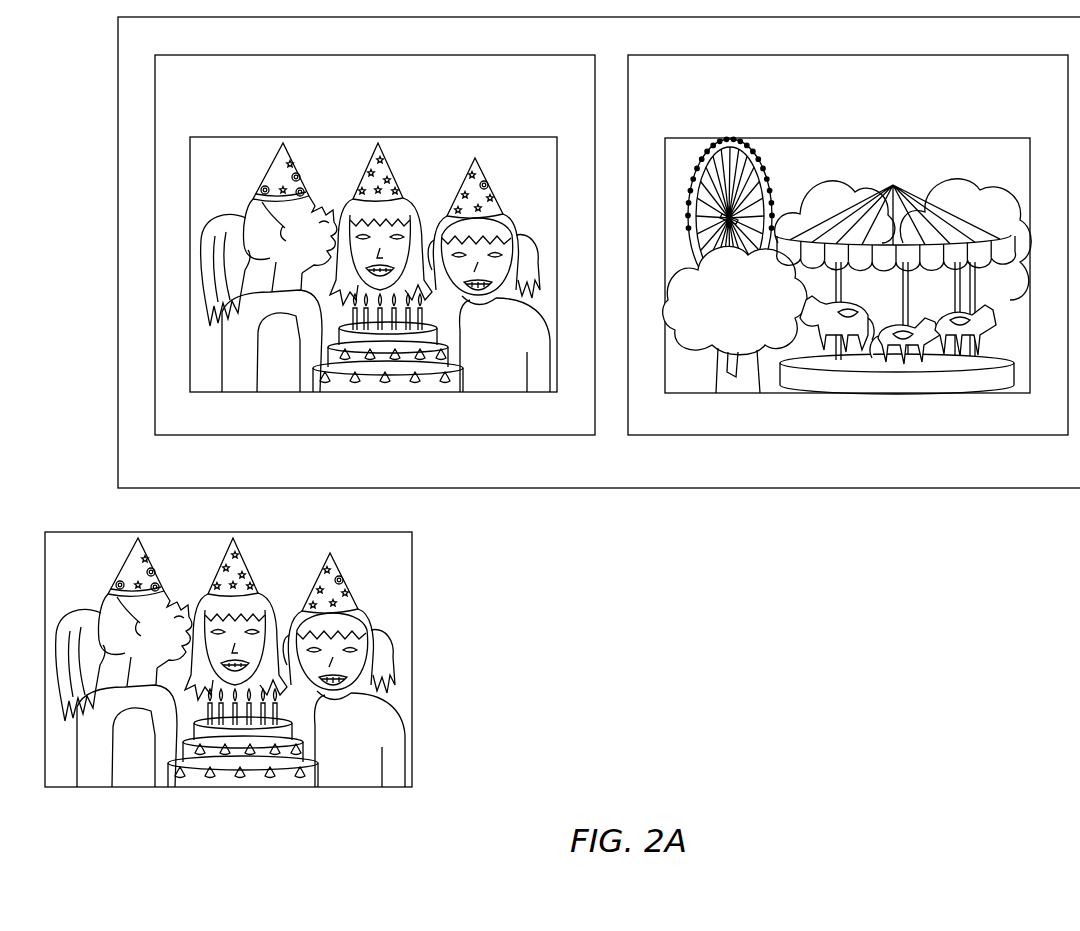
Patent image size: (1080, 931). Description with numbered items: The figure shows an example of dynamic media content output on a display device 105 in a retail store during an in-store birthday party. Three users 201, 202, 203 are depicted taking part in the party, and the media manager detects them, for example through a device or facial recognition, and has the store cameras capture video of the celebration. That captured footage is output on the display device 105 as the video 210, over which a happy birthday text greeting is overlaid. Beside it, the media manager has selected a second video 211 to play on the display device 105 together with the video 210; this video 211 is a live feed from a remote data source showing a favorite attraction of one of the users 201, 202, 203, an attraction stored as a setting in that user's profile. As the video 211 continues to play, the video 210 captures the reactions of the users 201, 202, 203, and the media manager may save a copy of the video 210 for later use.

The display device 105 is at (630, 478).
The video 210 is at (393, 430).
The video 211 is at (868, 430).
The user 201 is at (268, 173).
The user 202 is at (363, 174).
The user 203 is at (466, 178).